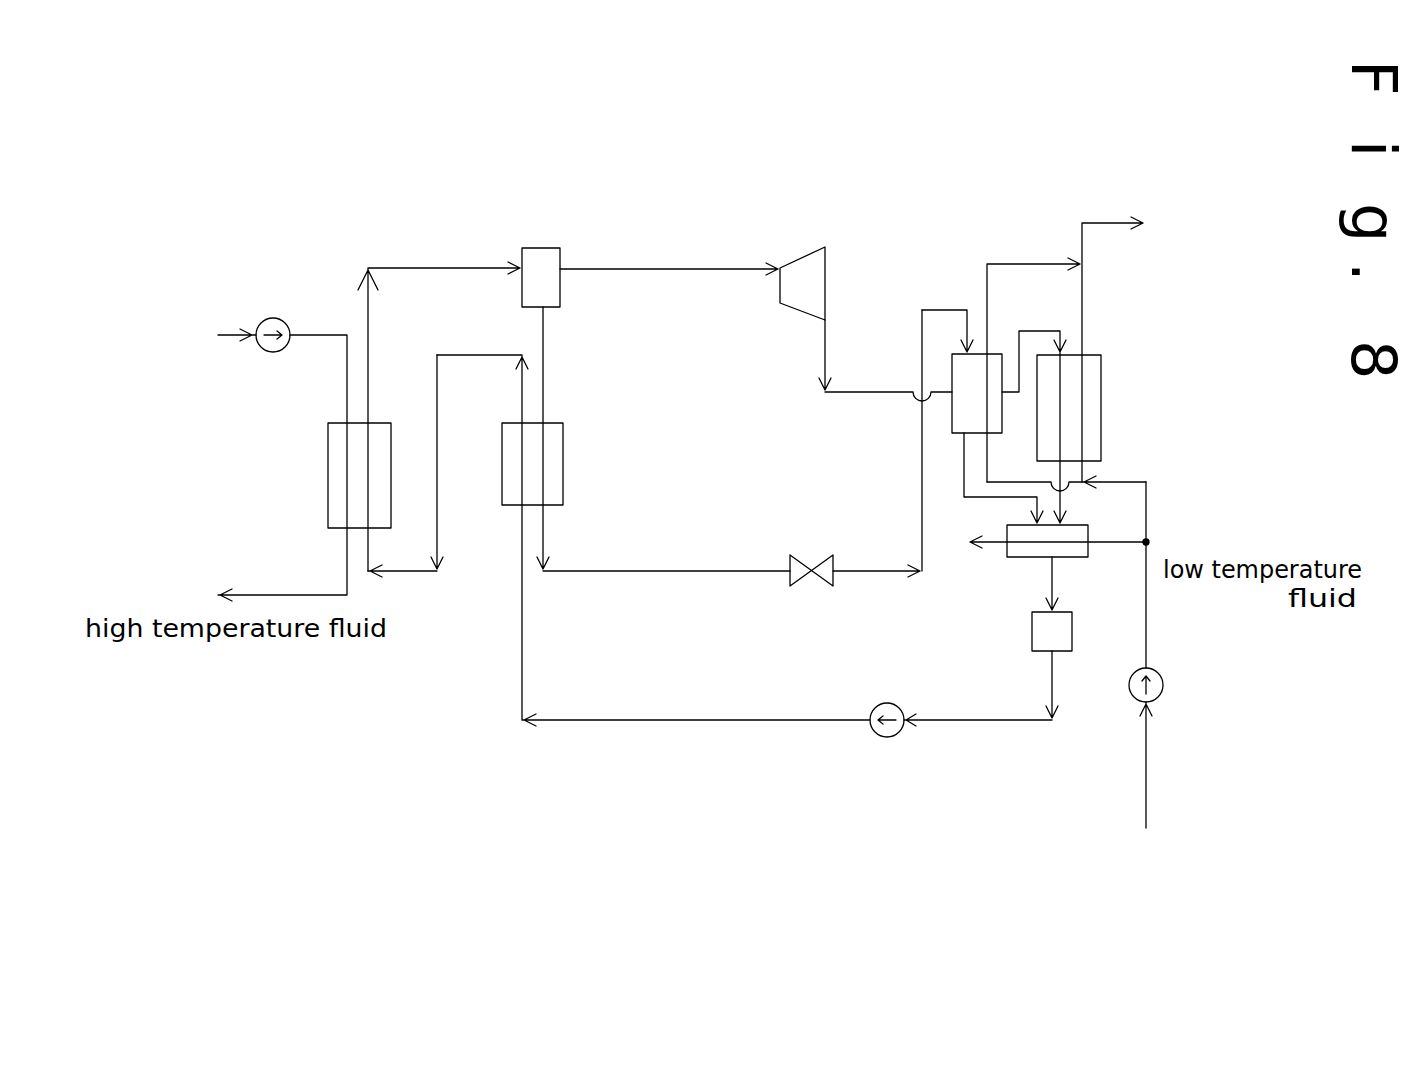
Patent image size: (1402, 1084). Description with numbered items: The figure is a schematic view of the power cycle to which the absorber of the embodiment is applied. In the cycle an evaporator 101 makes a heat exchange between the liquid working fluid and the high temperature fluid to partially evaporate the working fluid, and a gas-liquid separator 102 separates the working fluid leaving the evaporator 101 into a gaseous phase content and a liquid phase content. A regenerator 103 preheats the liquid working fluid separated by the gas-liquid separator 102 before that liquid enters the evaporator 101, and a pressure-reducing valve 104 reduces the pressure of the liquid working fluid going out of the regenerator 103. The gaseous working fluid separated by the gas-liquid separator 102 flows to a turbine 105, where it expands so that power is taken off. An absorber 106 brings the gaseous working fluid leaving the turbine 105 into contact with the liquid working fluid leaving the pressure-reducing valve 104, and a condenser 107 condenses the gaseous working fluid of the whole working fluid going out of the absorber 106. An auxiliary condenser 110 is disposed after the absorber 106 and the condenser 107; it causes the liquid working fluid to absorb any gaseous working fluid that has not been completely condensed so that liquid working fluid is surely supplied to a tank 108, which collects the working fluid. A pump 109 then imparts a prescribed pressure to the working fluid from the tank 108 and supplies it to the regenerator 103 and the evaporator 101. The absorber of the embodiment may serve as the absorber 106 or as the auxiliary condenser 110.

The evaporator 101 is at (328, 439).
The gas-liquid separator 102 is at (545, 248).
The regenerator 103 is at (563, 447).
The pressure-reducing valve 104 is at (802, 556).
The turbine 105 is at (805, 250).
The absorber 106 is at (992, 434).
The condenser 107 is at (1102, 430).
The tank 108 is at (1072, 622).
The pump 109 is at (890, 705).
The auxiliary condenser 110 is at (1088, 532).